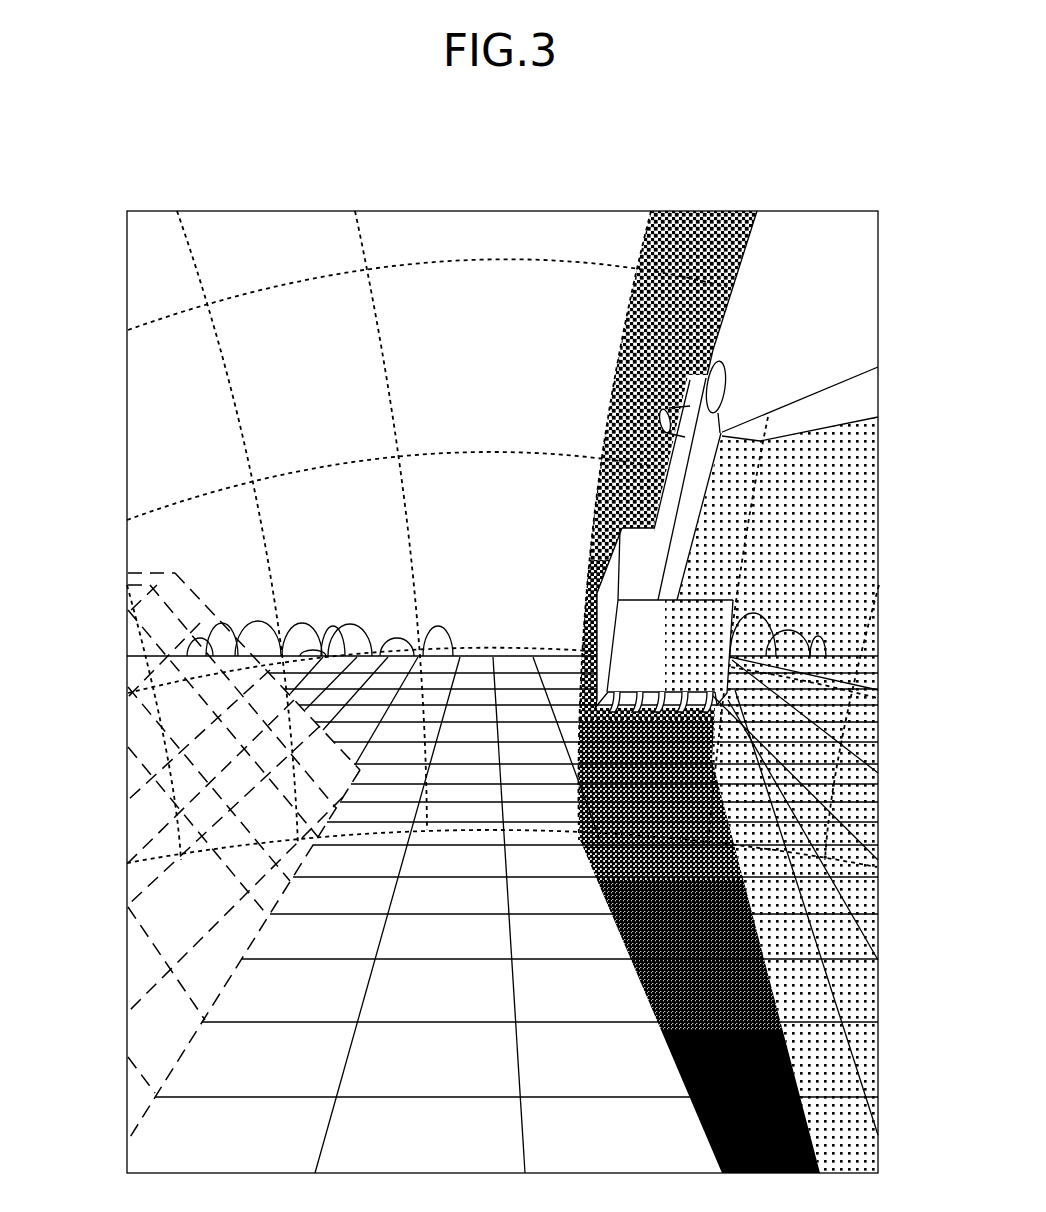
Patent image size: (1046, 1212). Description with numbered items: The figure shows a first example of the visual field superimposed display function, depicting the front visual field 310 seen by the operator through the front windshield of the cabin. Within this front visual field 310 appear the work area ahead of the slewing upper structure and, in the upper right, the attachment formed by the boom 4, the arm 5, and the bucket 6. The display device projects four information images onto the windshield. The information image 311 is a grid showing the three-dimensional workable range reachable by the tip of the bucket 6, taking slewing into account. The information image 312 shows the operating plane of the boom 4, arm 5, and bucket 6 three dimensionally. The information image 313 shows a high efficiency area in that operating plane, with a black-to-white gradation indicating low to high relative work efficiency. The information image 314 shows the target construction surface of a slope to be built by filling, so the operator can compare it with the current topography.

The front visual field 310 is at (97, 172).
The information image 311 is at (224, 384).
The information image 312 is at (674, 328).
The information image 313 is at (776, 996).
The information image 314 is at (216, 890).
The boom 4 is at (862, 298).
The arm 5 is at (683, 487).
The bucket 6 is at (717, 590).